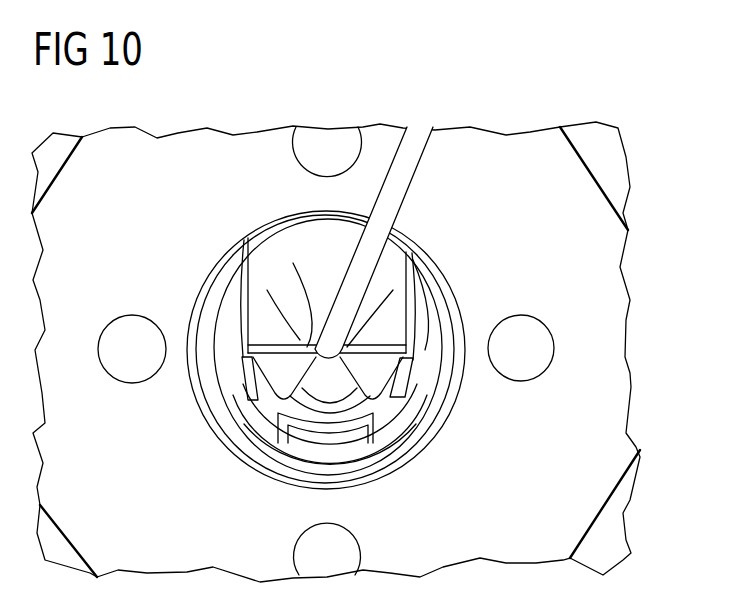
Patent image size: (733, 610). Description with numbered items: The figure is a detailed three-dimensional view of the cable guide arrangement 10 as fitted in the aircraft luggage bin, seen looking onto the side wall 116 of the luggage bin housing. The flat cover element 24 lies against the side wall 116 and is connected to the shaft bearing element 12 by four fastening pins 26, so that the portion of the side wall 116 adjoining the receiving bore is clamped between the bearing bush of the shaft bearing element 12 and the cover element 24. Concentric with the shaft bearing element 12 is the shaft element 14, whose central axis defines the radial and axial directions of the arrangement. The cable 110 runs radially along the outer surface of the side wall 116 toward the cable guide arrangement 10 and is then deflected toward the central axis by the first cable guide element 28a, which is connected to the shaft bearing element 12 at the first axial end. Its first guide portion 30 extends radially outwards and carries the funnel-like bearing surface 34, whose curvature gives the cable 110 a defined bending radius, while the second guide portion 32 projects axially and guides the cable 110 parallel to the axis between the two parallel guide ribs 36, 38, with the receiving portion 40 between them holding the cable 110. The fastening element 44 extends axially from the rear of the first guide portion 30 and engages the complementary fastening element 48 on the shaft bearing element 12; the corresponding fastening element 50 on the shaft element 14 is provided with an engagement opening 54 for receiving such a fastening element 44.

The cable guide arrangement 10 is at (558, 84).
The shaft bearing element 12 is at (418, 432).
The shaft element 14 is at (420, 396).
The cover element 24 is at (620, 332).
The fastening pins 26 is at (293, 146).
The first cable guide element 28a is at (424, 253).
The first guide portion 30 is at (265, 233).
The second guide portion 32 is at (277, 400).
The bearing surface 34 is at (315, 252).
The guide rib 36 is at (254, 384).
The guide rib 38 is at (391, 372).
The receiving portion 40 is at (290, 350).
The fastening element 44 is at (322, 440).
The complementary fastening element 48 is at (240, 277).
The complementary fastening element 50 is at (385, 423).
The engagement opening 54 is at (341, 437).
The cable 110 is at (417, 168).
The side wall 116 is at (606, 155).